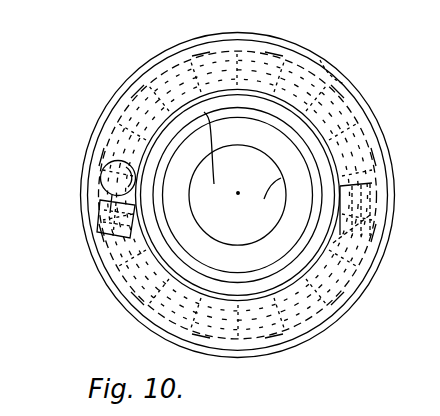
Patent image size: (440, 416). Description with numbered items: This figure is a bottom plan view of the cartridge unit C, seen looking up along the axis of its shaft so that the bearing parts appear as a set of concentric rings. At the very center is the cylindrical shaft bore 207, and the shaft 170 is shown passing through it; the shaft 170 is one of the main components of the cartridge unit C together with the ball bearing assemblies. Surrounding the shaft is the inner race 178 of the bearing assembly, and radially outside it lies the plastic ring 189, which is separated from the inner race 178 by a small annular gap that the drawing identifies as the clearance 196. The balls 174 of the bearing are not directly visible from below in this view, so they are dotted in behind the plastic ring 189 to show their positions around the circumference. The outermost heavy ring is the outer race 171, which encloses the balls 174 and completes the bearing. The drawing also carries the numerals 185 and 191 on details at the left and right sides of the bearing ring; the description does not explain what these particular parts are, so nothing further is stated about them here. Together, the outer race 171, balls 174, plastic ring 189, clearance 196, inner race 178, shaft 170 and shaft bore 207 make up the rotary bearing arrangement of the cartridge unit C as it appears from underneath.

The cartridge unit C is at (108, 86).
The outer race 171 is at (322, 53).
The balls 174 is at (332, 82).
The plastic ring 189 is at (345, 103).
The clearance 196 is at (348, 152).
The retaining member 191 is at (362, 225).
The ball 185 is at (100, 167).
The shaft 170 is at (260, 137).
The inner race 178 is at (215, 159).
The cylindrical shaft bore 207 is at (265, 199).